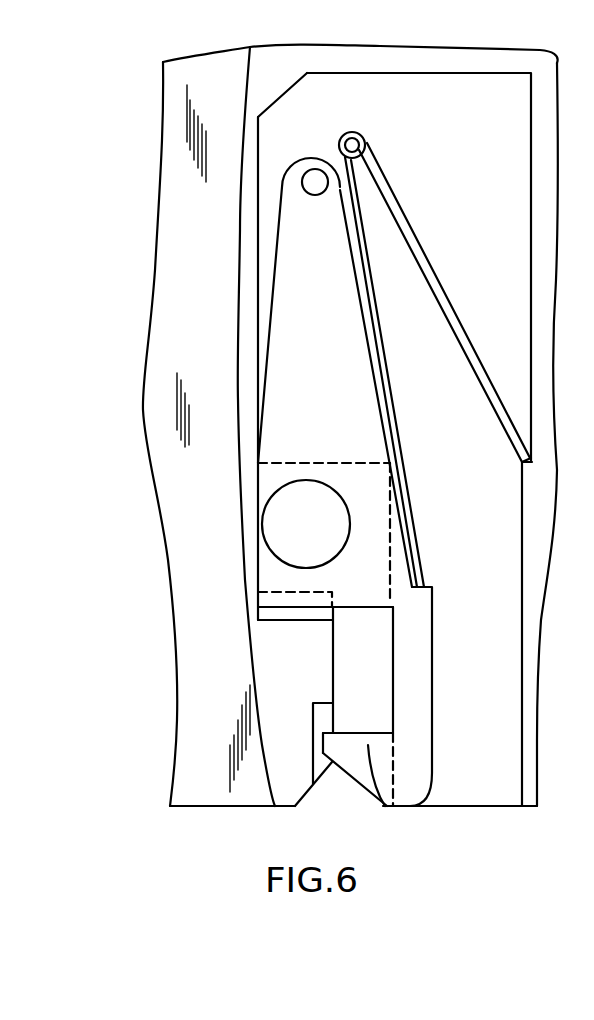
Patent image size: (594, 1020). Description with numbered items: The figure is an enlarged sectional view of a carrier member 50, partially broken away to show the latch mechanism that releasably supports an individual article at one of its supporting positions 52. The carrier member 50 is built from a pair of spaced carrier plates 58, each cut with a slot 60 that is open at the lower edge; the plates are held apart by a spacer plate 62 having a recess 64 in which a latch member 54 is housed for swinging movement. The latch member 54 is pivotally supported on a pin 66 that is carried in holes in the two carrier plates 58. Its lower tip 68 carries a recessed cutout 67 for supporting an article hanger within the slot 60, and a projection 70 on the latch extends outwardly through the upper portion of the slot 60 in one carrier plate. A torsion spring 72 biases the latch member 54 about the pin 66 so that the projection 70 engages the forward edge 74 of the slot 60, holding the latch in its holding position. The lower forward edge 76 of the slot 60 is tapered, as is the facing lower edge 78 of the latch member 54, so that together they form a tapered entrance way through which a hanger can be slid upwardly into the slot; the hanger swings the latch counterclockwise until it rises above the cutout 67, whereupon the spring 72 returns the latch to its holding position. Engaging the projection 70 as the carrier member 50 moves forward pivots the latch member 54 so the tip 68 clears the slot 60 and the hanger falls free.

The carrier member 50 is at (459, 546).
The supporting position 52 is at (358, 657).
The latch member 54 is at (422, 713).
The carrier plate 58 is at (197, 656).
The slot 60 is at (295, 591).
The spacer plate 62 is at (250, 250).
The recess 64 is at (259, 289).
The pin 66 is at (316, 177).
The cutout 67 is at (388, 697).
The lower tip 68 is at (387, 802).
The projection 70 is at (273, 538).
The torsion spring 72 is at (388, 180).
The forward edge 74 is at (258, 500).
The lower forward edge 76 is at (318, 781).
The lower edge 78 is at (357, 783).